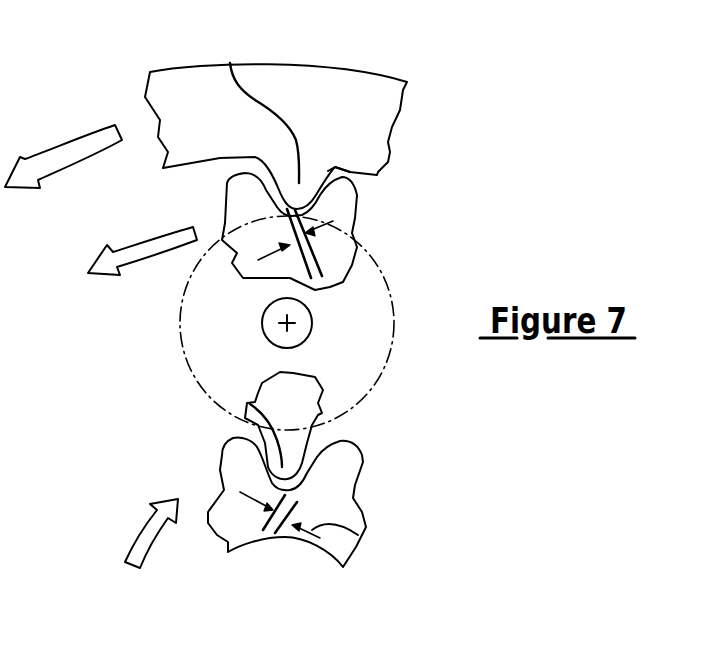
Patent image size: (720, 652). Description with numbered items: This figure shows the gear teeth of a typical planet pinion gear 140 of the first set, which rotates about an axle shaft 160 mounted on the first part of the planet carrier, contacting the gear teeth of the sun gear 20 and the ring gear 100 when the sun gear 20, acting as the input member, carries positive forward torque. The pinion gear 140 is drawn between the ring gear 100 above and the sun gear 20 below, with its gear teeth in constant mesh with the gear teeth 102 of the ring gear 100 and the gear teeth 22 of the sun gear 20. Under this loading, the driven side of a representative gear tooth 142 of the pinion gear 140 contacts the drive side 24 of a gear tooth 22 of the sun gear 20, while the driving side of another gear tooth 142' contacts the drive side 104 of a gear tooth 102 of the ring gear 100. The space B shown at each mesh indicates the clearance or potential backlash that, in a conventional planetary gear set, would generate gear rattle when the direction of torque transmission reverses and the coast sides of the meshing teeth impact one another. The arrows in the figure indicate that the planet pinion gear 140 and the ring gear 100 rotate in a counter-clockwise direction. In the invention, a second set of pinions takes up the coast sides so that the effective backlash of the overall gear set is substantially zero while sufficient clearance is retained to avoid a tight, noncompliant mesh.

The ring gear 100 is at (318, 62).
The gear teeth of ring gear 102 is at (230, 63).
The drive side of gear tooth of ring gear 104 is at (334, 171).
The gear tooth of planet pinion gear 142' is at (340, 231).
The planet pinion gear 140 is at (332, 314).
The axle shaft 160 is at (300, 332).
The gear tooth of planet pinion gear 142 is at (236, 425).
The sun gear 20 is at (242, 523).
The gear tooth of sun gear 22 is at (233, 460).
The drive side of gear tooth of sun gear 24 is at (259, 458).
The space (clearance or backlash) B is at (362, 249).